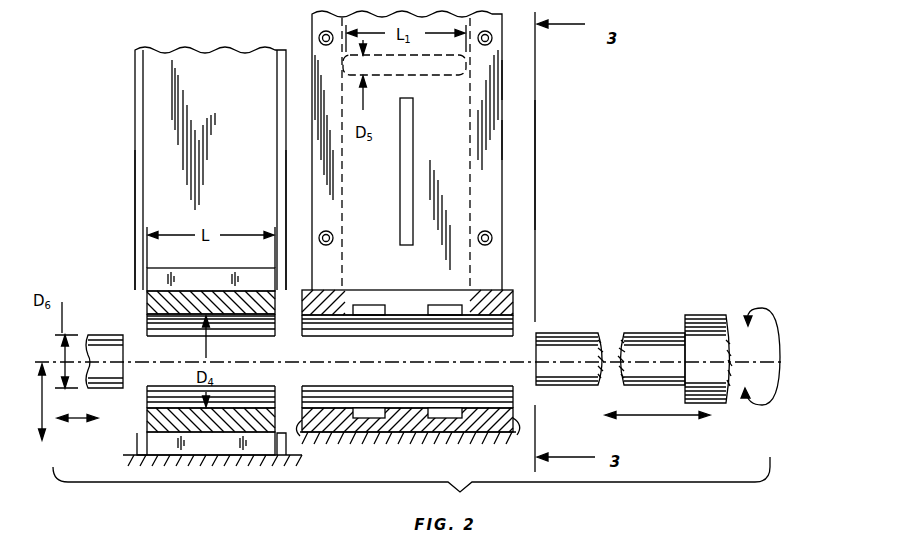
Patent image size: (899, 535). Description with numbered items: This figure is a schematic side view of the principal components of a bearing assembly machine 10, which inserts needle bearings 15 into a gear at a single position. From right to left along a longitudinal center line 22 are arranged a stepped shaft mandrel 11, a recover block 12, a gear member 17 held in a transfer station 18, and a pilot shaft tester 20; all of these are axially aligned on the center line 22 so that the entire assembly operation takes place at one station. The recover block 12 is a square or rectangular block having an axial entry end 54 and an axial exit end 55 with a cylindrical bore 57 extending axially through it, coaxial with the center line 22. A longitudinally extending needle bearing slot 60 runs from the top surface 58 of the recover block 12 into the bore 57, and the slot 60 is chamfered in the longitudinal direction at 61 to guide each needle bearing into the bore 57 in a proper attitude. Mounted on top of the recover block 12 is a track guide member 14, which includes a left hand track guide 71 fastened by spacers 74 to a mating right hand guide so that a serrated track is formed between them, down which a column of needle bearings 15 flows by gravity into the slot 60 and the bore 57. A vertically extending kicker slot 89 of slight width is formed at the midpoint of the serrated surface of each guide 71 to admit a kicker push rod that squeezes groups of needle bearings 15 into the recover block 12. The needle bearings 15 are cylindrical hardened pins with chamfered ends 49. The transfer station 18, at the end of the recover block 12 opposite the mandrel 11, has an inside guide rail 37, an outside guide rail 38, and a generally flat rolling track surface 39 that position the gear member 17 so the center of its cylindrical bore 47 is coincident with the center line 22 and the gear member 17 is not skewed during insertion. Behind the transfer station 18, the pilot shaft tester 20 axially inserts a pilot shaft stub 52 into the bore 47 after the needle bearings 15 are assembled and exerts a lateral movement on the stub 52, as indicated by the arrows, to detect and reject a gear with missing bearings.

The bearing assembly machine 10 is at (551, 153).
The stepped shaft mandrel 11 is at (588, 333).
The recover block 12 is at (513, 300).
The track guide member 14 is at (515, 214).
The needle bearings 15 is at (410, 80).
The gear member 17 is at (213, 278).
The transfer station 18 is at (130, 144).
The pilot shaft tester 20 is at (151, 285).
The longitudinal center line 22 is at (655, 358).
The inside guide rail 37 is at (135, 185).
The outside guide rail 38 is at (277, 182).
The rolling track surface 39 is at (150, 424).
The cylindrical bore 47 is at (150, 393).
The chamfered ends 49 is at (500, 80).
The pilot shaft stub 52 is at (116, 334).
The axial entry end 54 is at (410, 436).
The axial exit end 55 is at (300, 428).
The cylindrical bore 57 is at (503, 395).
The top surface 58 is at (507, 290).
The needle bearing slot 60 is at (342, 312).
The longitudinal chamfer 61 is at (475, 302).
The left hand track guide 71 is at (500, 138).
The spacers 74 is at (322, 34).
The kicker slot 89 is at (413, 125).